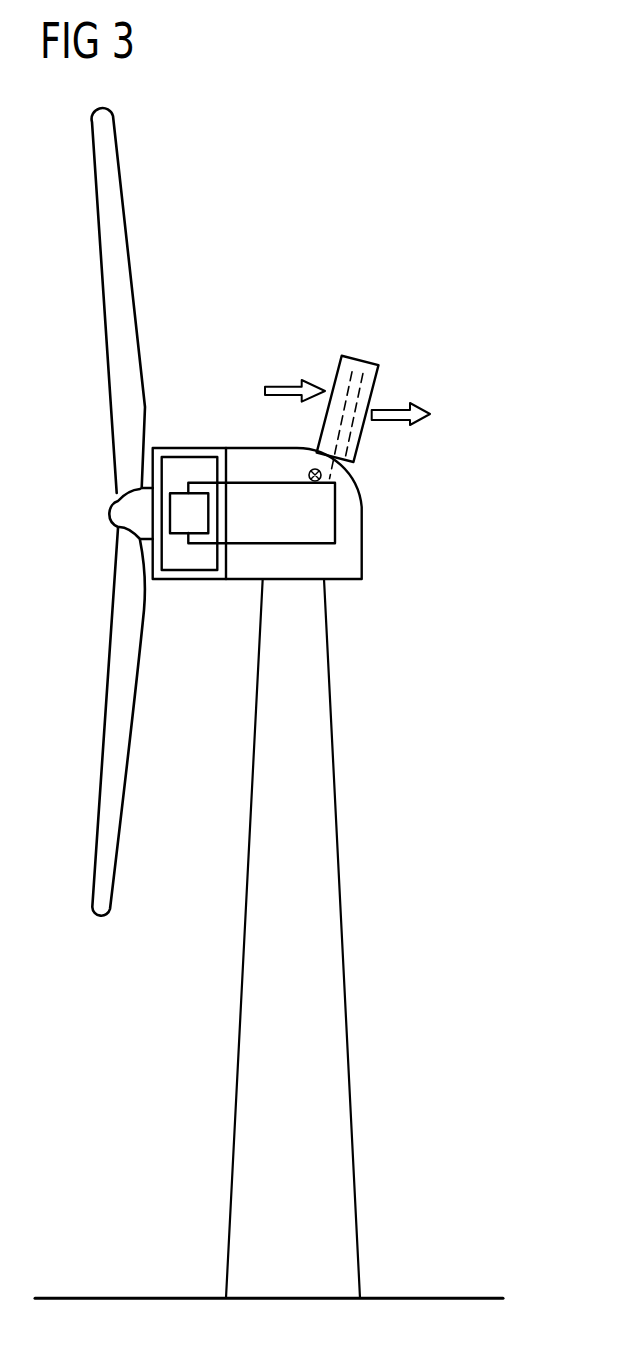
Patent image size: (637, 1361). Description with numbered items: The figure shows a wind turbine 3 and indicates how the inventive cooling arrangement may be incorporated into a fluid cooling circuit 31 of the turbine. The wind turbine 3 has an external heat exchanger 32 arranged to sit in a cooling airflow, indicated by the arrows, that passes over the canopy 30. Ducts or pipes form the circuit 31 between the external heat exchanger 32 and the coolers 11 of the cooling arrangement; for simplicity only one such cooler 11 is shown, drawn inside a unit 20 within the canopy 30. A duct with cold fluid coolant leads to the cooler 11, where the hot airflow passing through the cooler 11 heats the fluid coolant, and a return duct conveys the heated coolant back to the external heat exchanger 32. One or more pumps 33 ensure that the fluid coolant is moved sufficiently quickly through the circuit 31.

The wind turbine 3 is at (445, 288).
The cooler 11 is at (180, 527).
The control unit 20 is at (189, 468).
The canopy 30 is at (350, 558).
The fluid cooling circuit 31 is at (322, 515).
The external heat exchanger 32 is at (363, 361).
The pump 33 is at (310, 468).